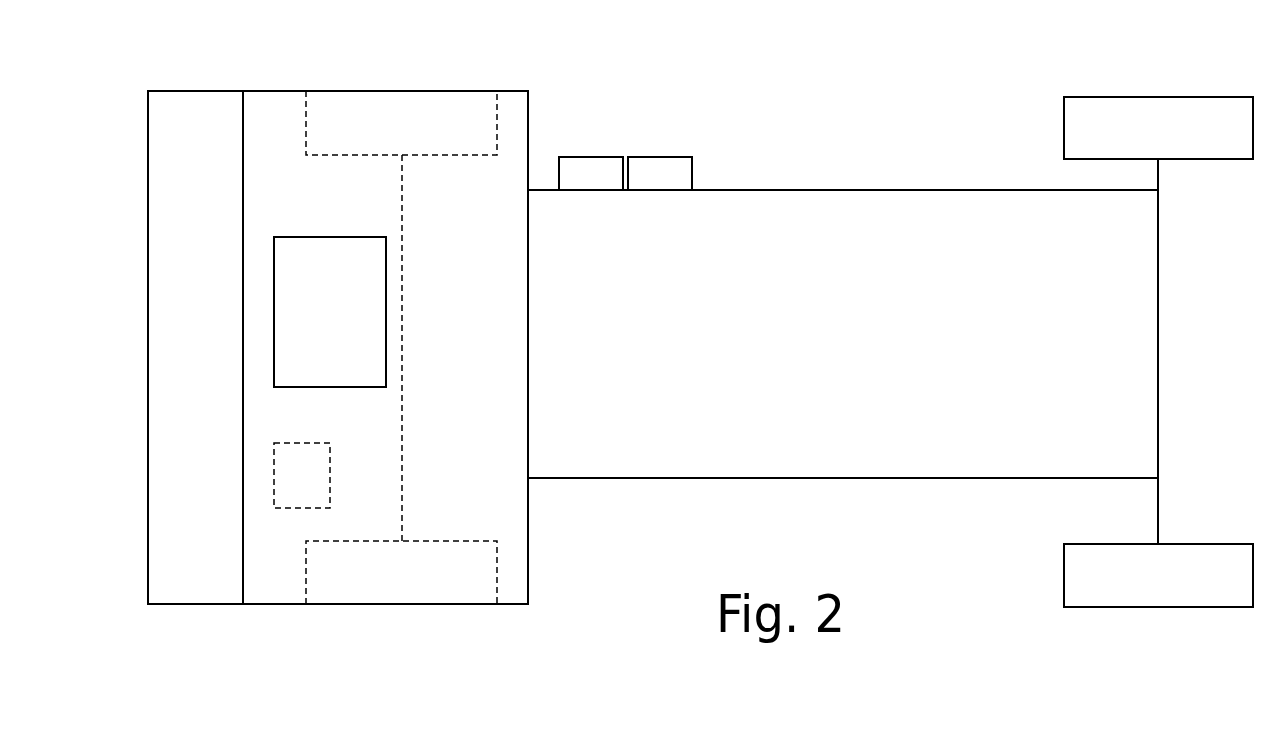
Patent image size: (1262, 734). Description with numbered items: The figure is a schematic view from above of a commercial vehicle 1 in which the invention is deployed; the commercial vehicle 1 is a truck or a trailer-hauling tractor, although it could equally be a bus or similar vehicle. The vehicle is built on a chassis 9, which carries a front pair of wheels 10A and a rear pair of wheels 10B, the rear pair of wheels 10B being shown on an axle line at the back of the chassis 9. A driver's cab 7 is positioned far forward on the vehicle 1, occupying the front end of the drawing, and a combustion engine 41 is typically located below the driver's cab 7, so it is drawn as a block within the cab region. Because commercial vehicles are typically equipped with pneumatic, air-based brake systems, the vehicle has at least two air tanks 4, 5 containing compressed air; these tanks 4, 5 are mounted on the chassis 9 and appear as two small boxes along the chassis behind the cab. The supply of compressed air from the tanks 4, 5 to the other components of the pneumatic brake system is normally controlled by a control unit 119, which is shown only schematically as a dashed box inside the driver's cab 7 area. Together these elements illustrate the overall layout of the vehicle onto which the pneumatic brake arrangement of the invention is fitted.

The commercial vehicle 1 is at (289, 124).
The air tank 4 is at (596, 156).
The air tank 5 is at (668, 156).
The driver's cab 7 is at (204, 604).
The chassis 9 is at (1158, 367).
The front pair of wheels 10A is at (410, 97).
The rear pair of wheels 10B is at (1170, 110).
The combustion engine 41 is at (322, 262).
The control unit 119 is at (316, 457).